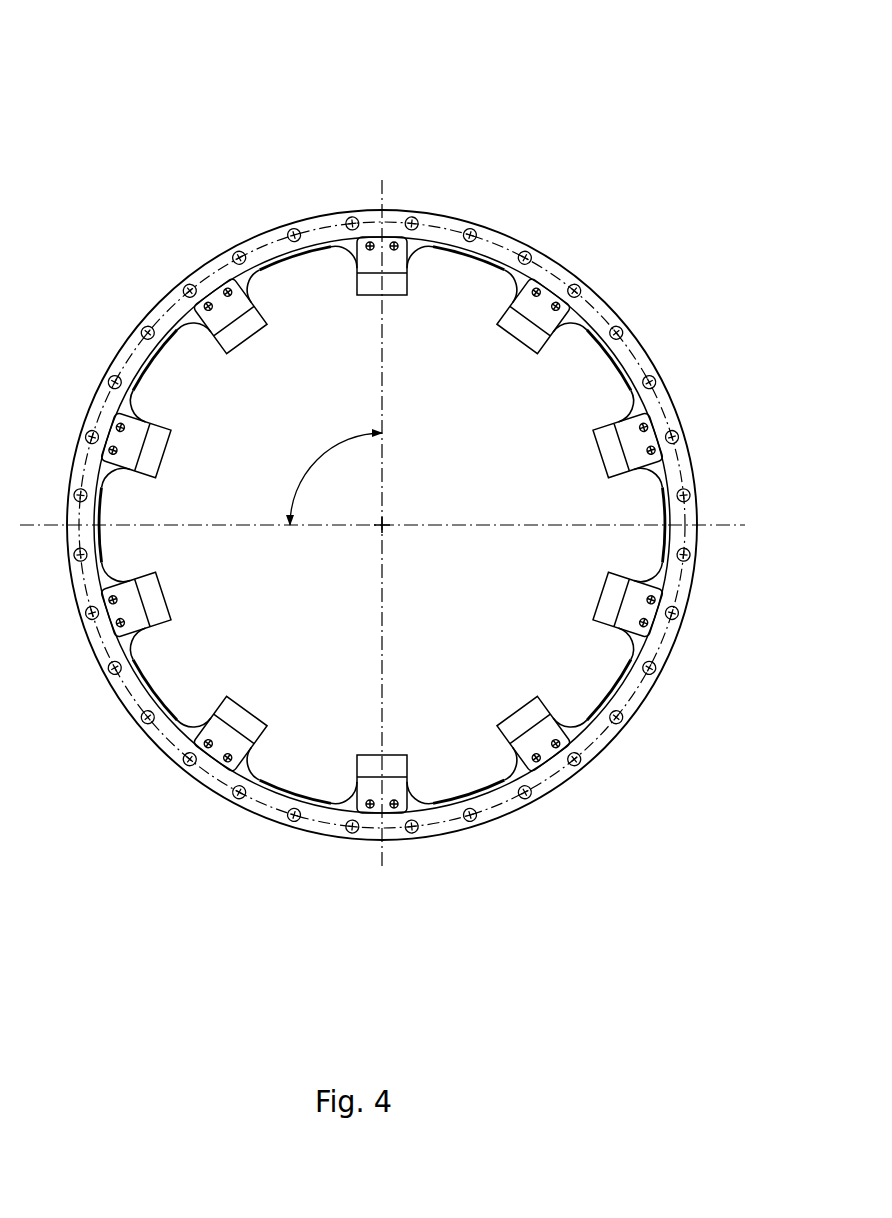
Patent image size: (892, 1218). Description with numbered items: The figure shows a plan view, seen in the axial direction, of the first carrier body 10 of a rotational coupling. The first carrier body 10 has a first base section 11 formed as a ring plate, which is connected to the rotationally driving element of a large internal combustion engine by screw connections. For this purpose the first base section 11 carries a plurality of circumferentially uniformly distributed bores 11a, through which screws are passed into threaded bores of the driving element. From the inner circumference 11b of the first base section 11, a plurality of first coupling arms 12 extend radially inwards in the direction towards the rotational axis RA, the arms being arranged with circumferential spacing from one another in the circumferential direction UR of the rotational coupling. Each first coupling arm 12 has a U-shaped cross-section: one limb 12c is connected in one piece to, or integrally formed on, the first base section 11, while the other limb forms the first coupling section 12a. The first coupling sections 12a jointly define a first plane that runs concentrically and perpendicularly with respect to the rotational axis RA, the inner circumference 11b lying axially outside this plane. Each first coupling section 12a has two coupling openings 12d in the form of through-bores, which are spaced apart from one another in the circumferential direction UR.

The first carrier body 10 is at (583, 86).
The first base section 11 is at (547, 265).
The bores 11a is at (418, 221).
The inner circumference 11b is at (175, 342).
The first coupling arm 12 is at (419, 299).
The first coupling section 12a is at (376, 252).
The limb 12c is at (258, 292).
The coupling openings 12d is at (208, 745).
The circumferential direction UR is at (336, 479).
The rotational axis RA is at (394, 533).